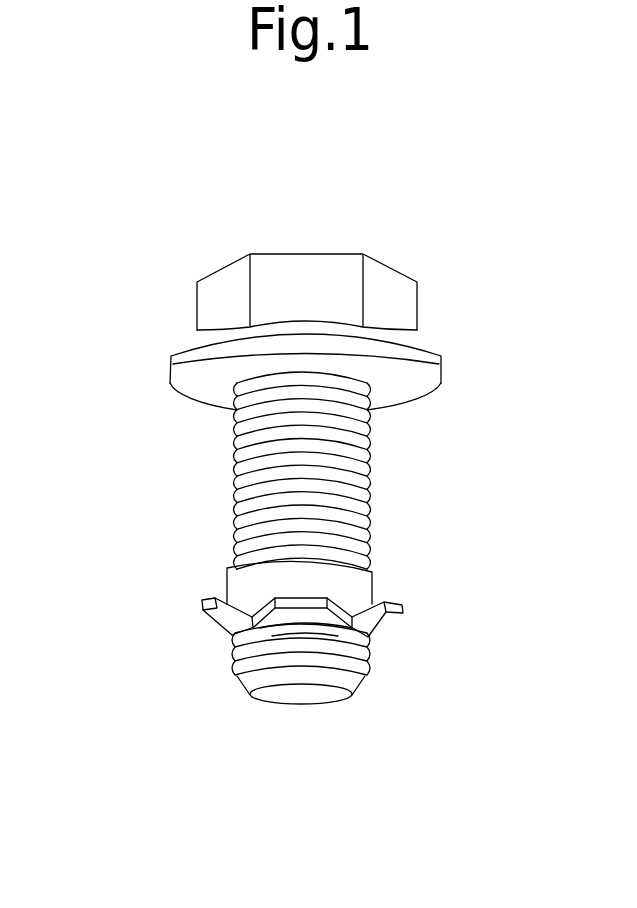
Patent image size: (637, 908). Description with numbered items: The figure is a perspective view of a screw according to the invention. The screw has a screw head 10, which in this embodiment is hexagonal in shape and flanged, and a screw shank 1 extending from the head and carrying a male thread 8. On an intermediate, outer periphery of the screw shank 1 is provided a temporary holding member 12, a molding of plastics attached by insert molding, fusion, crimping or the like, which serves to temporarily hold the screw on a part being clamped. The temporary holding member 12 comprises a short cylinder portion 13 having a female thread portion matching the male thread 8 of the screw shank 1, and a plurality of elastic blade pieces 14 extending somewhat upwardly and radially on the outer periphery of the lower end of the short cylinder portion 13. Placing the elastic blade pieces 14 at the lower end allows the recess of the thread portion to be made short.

The screw shank 1 is at (290, 485).
The male thread 8 is at (367, 512).
The screw head 10 is at (307, 280).
The temporary holding member 12 is at (290, 613).
The short cylinder portion 13 is at (265, 577).
The elastic blade pieces 14 is at (222, 620).